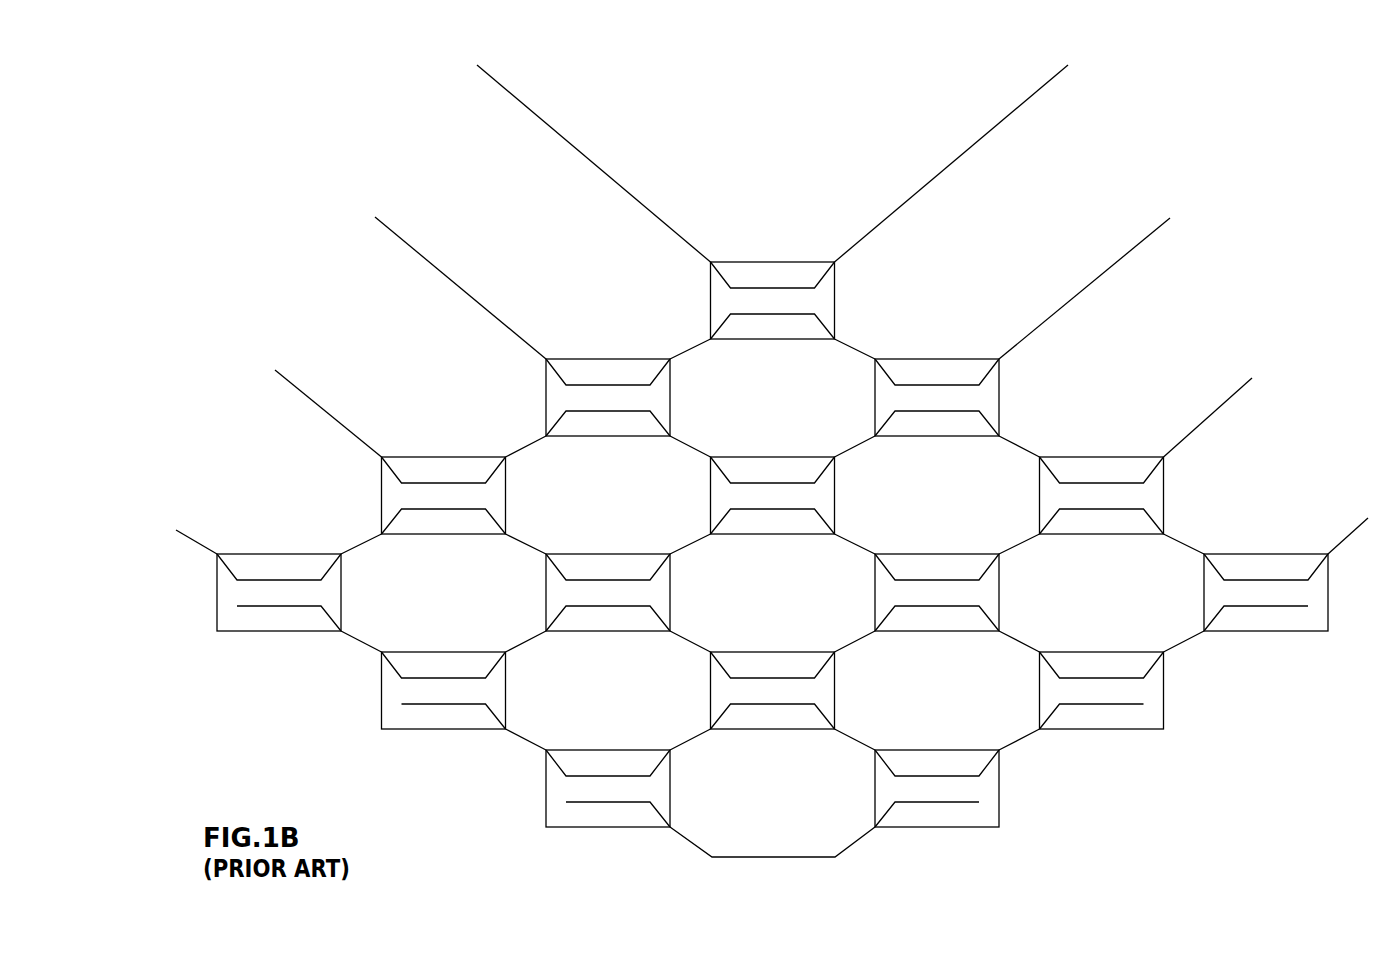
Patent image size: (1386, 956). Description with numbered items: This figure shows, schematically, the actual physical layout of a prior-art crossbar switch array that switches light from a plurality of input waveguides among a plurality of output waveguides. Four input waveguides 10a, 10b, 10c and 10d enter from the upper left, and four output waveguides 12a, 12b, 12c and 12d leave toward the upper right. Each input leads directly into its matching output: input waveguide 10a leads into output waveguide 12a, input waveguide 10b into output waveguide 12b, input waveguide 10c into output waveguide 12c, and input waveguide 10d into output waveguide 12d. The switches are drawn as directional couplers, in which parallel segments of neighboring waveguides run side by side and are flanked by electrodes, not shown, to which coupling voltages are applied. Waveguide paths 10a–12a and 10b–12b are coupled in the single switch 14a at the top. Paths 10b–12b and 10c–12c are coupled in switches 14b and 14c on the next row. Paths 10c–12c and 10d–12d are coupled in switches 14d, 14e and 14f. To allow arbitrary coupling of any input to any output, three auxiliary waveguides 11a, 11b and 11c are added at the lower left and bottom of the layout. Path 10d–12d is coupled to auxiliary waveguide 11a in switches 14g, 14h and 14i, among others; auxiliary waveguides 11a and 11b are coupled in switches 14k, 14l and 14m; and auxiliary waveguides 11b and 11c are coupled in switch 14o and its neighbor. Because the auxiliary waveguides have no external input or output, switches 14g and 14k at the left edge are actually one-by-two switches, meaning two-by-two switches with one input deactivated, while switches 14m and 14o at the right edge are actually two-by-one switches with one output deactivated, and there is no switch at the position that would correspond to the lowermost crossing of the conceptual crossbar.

The input waveguide 10a is at (572, 150).
The input waveguide 10b is at (445, 276).
The input waveguide 10c is at (318, 405).
The input waveguide 10d is at (200, 543).
The output waveguide 12a is at (972, 147).
The output waveguide 12b is at (1100, 277).
The output waveguide 12c is at (1225, 403).
The output waveguide 12d is at (1347, 538).
The auxiliary waveguide 11a is at (360, 642).
The auxiliary waveguide 11b is at (522, 740).
The auxiliary waveguide 11c is at (686, 840).
The switch 14a is at (770, 261).
The switch 14b is at (609, 358).
The switch 14c is at (937, 358).
The switch 14d is at (440, 456).
The switch 14e is at (770, 456).
The switch 14f is at (1100, 456).
The switch 14g is at (274, 553).
The switch 14h is at (607, 553).
The switch 14i is at (937, 553).
The switch 14k is at (440, 651).
The switch 14l is at (775, 651).
The switch 14m is at (1100, 651).
The switch 14o is at (937, 749).